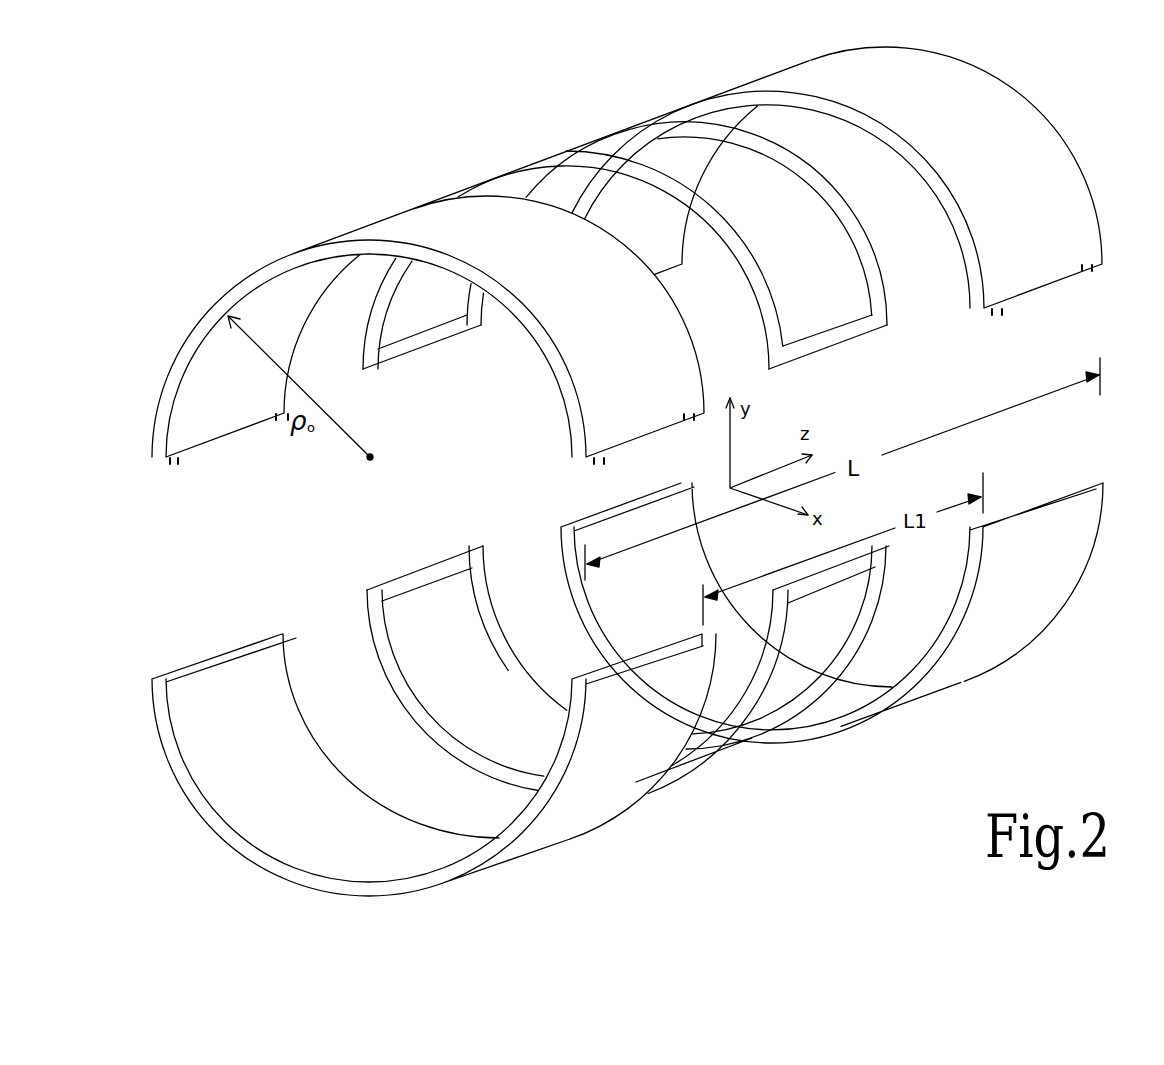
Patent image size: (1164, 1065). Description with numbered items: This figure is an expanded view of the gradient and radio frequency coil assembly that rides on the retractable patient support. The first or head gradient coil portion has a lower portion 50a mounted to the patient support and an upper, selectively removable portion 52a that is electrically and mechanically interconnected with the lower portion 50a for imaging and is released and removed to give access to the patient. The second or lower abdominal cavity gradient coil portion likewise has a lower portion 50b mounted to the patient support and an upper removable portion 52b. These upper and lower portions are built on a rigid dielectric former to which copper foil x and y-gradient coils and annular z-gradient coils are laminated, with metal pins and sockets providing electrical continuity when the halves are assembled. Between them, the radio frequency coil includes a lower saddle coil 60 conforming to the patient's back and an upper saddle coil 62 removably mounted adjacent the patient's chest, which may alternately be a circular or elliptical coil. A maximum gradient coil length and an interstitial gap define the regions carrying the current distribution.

The upper removable portion 52a is at (1030, 125).
The upper removable portion 52b is at (300, 252).
The upper saddle coil 62 is at (588, 168).
The lower portion 50a is at (972, 662).
The lower portion 50b is at (555, 828).
The lower saddle coil 60 is at (720, 752).